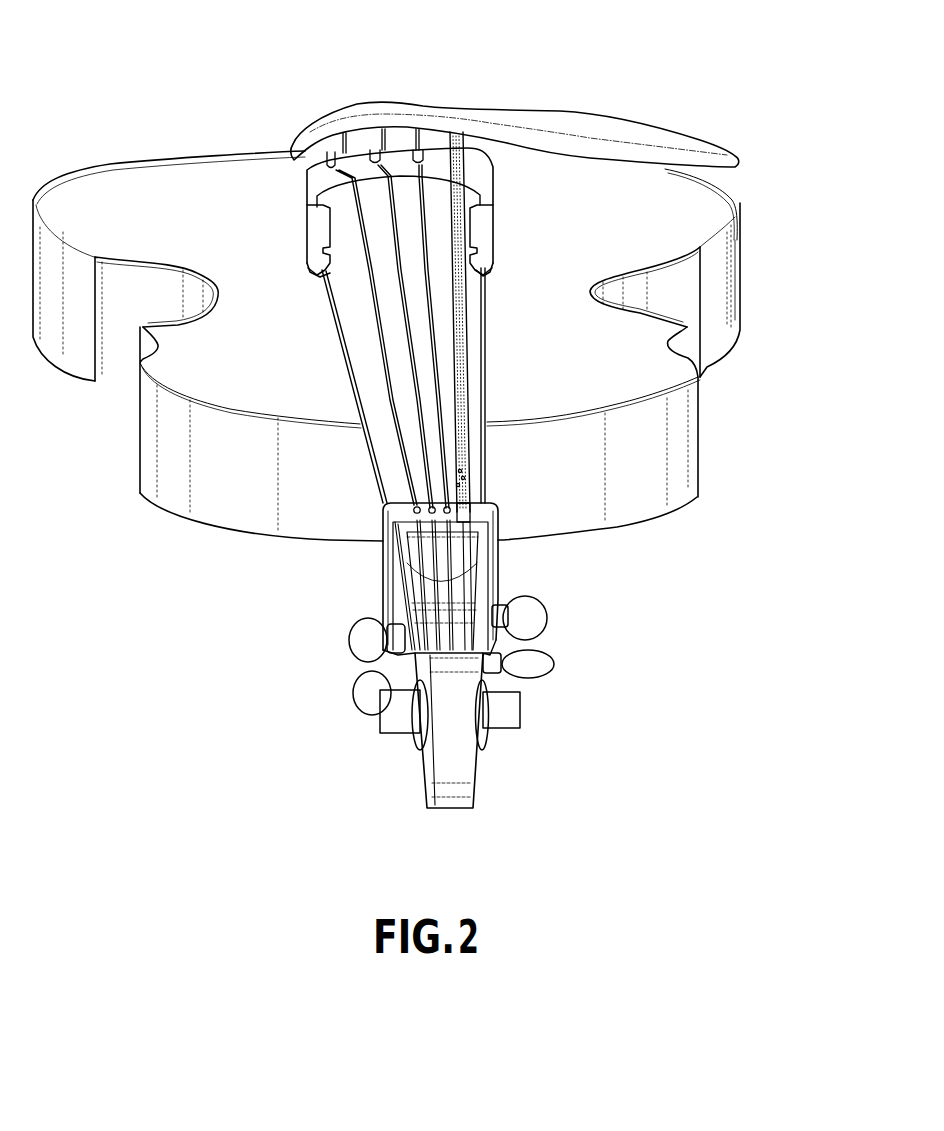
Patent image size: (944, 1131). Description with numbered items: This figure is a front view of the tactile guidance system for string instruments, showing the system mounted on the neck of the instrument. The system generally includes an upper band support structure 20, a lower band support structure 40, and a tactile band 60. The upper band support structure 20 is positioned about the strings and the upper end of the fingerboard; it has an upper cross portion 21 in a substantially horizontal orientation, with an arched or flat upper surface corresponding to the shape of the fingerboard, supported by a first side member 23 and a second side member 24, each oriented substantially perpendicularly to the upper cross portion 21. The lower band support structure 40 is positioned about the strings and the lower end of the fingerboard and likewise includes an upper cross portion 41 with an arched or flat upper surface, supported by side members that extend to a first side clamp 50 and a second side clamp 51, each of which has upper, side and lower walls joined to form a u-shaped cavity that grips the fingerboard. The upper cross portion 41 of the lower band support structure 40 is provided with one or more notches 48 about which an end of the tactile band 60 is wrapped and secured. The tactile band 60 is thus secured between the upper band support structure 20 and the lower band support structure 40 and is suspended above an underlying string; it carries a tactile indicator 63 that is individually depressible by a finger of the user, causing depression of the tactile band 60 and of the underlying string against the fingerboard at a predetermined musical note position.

The upper band support structure 20 is at (419, 655).
The upper cross portion 21 is at (392, 522).
The first side member 23 is at (493, 561).
The second side member 24 is at (383, 578).
The lower band support structure 40 is at (510, 191).
The upper cross portion 41 is at (322, 176).
The notches 48 is at (428, 166).
The first side clamp 50 is at (490, 228).
The second side clamp 51 is at (317, 224).
The tactile band 60 is at (468, 361).
The tactile indicator 63 is at (468, 476).